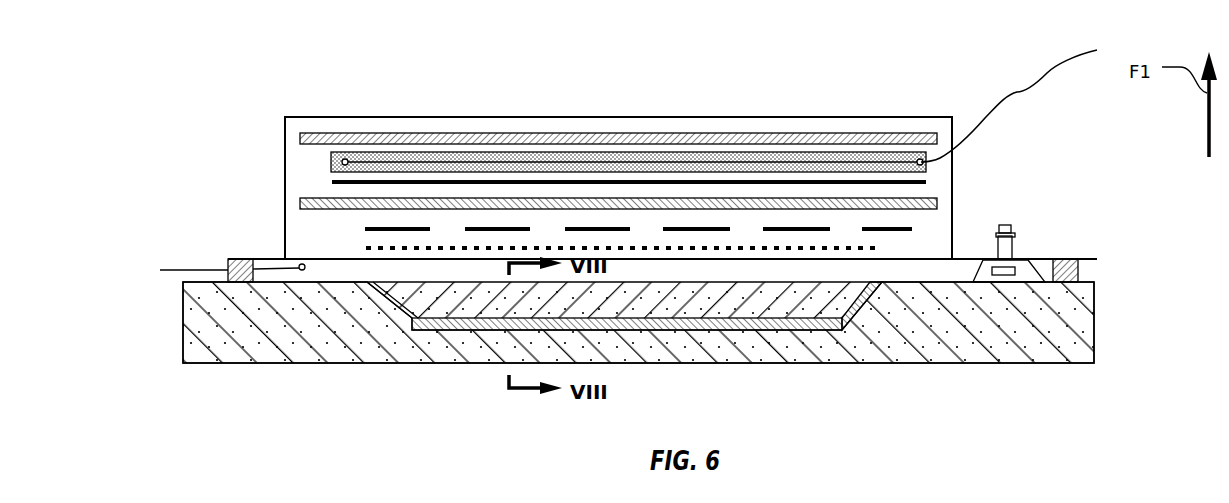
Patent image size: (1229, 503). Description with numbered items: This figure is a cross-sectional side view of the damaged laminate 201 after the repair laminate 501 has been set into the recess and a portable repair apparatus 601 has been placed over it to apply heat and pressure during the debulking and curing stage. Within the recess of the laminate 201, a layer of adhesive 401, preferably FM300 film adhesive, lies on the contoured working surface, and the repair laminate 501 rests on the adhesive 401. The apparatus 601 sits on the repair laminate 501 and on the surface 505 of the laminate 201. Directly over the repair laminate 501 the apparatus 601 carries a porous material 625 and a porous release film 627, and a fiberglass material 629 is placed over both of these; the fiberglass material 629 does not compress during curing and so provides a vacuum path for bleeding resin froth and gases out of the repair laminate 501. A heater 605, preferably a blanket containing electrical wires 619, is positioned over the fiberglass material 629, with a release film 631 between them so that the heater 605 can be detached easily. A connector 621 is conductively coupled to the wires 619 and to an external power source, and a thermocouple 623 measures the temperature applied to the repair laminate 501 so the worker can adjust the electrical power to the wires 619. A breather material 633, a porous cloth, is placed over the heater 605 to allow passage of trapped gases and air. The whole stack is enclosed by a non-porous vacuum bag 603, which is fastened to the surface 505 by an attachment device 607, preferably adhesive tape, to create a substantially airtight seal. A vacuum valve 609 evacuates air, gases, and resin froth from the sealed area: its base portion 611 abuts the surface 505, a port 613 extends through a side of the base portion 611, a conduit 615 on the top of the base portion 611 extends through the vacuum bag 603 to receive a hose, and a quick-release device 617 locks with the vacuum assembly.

The laminate 201 is at (1047, 363).
The adhesive 401 is at (768, 330).
The repair laminate 501 is at (465, 318).
The surface 505 is at (196, 268).
The repair apparatus 601 is at (676, 153).
The vacuum bag 603 is at (607, 117).
The heater 605 is at (332, 162).
The attachment device 607 is at (228, 281).
The vacuum valve 609 is at (958, 272).
The base portion 611 is at (1035, 270).
The port 613 is at (1016, 270).
The conduit 615 is at (1013, 255).
The quick-release device 617 is at (1012, 247).
The electrical wires 619 is at (895, 155).
The connector 621 is at (1018, 92).
The thermocouple 623 is at (301, 270).
The porous material 625 is at (367, 247).
The porous release film 627 is at (912, 229).
The fiberglass material 629 is at (300, 203).
The release film 631 is at (928, 182).
The breather material 633 is at (300, 135).